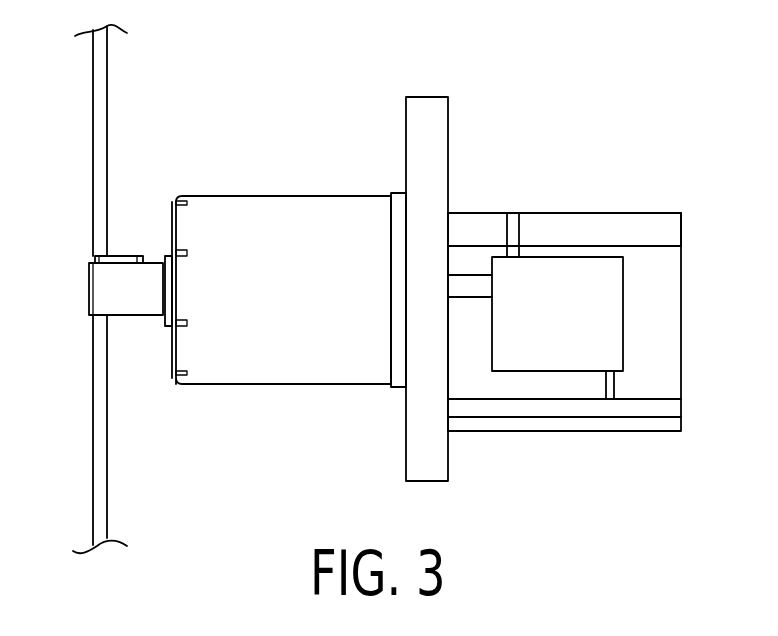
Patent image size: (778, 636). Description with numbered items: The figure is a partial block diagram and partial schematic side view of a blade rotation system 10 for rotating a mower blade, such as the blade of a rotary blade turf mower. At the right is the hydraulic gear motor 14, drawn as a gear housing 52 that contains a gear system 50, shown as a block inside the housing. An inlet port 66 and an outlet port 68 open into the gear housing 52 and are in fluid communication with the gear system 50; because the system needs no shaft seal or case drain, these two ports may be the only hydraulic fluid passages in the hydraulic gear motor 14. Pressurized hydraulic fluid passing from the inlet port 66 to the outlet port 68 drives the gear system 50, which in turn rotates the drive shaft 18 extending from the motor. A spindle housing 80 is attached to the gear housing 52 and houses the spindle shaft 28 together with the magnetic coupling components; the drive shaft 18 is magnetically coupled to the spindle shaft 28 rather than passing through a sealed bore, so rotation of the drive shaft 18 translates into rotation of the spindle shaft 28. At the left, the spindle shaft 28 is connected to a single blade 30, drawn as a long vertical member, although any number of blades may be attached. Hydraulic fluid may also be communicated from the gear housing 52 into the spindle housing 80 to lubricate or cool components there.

The blade rotation system 10 is at (208, 59).
The blade 30 is at (92, 146).
The spindle shaft 28 is at (142, 322).
The spindle housing 80 is at (283, 196).
The drive shaft 18 is at (467, 275).
The hydraulic gear motor 14 is at (570, 213).
The gear housing 52 is at (655, 213).
The gear system 50 is at (537, 372).
The outlet port 68 is at (517, 226).
The inlet port 66 is at (612, 385).